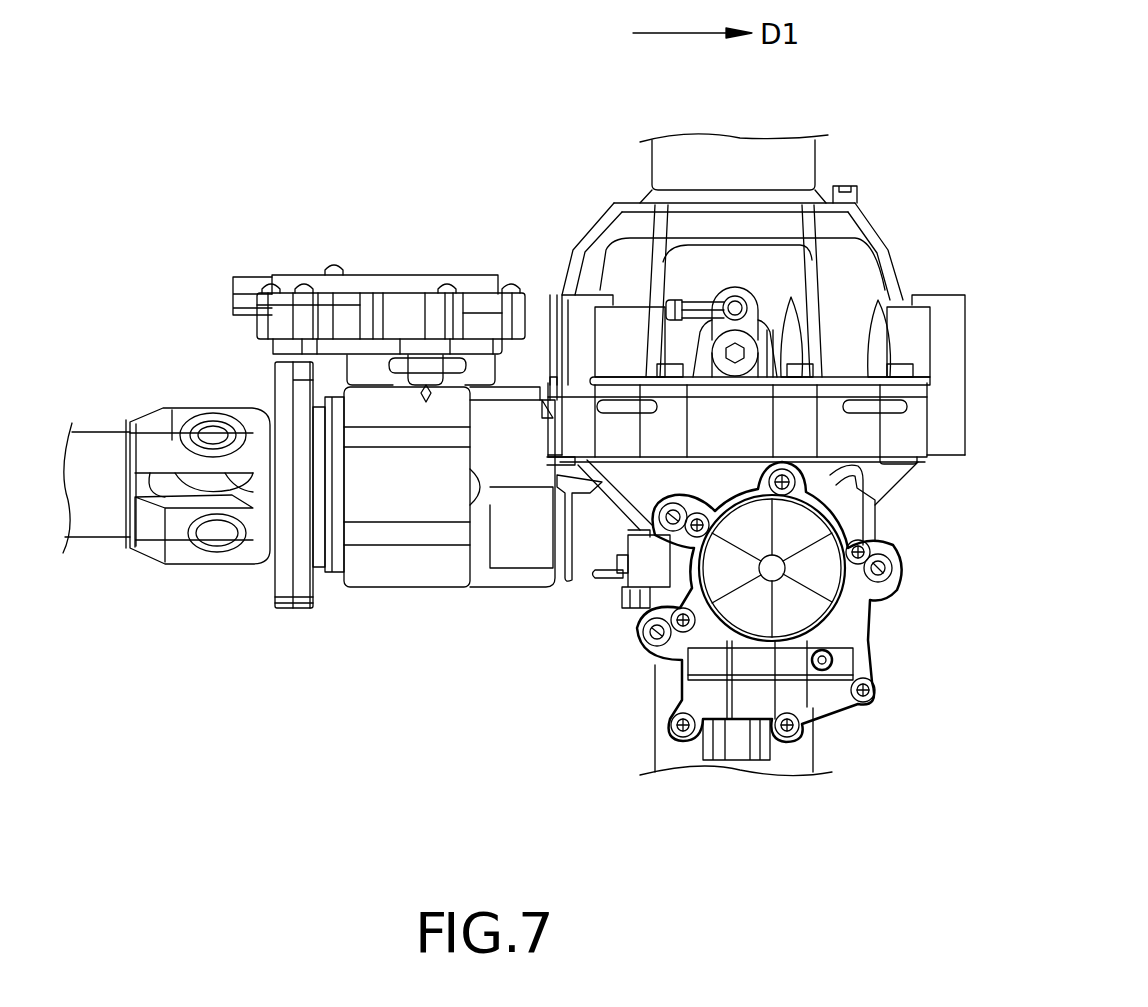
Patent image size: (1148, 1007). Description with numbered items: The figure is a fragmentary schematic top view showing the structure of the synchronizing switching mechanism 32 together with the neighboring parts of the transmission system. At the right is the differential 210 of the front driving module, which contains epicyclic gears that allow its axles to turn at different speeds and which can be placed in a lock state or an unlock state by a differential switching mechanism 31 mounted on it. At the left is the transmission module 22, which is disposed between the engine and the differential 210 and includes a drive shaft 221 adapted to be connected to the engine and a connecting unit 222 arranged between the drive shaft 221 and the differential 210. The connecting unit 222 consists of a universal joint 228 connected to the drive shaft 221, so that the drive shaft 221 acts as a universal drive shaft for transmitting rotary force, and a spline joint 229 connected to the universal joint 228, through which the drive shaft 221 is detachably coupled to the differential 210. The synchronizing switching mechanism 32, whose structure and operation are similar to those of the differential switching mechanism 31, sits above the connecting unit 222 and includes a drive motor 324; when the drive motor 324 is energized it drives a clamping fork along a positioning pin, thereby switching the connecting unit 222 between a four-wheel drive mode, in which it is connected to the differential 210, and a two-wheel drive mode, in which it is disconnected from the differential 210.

The differential 210 is at (875, 282).
The differential switching mechanism 31 is at (873, 630).
The synchronizing switching mechanism 32 is at (252, 246).
The drive motor 324 is at (410, 302).
The transmission module 22 is at (137, 398).
The connecting unit 222 is at (220, 412).
The drive shaft 221 is at (102, 530).
The universal joint 228 is at (183, 560).
The spline joint 229 is at (337, 568).